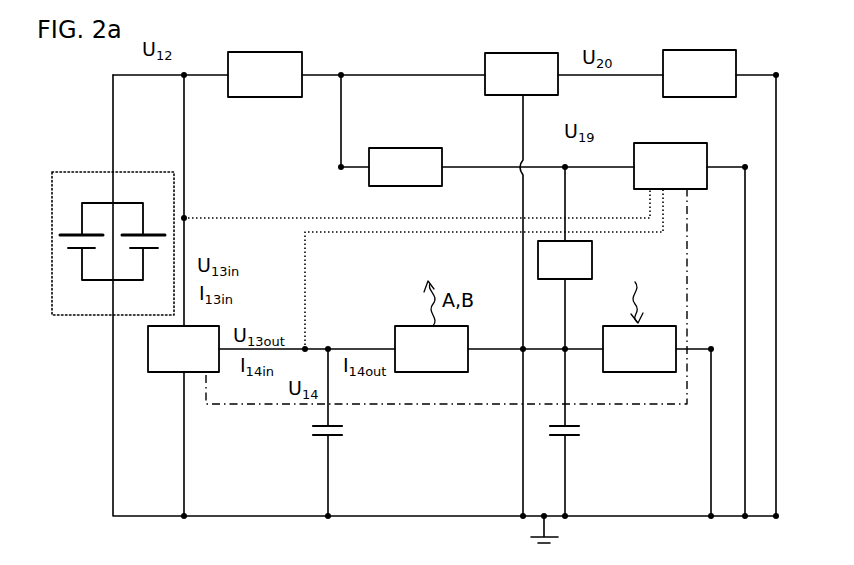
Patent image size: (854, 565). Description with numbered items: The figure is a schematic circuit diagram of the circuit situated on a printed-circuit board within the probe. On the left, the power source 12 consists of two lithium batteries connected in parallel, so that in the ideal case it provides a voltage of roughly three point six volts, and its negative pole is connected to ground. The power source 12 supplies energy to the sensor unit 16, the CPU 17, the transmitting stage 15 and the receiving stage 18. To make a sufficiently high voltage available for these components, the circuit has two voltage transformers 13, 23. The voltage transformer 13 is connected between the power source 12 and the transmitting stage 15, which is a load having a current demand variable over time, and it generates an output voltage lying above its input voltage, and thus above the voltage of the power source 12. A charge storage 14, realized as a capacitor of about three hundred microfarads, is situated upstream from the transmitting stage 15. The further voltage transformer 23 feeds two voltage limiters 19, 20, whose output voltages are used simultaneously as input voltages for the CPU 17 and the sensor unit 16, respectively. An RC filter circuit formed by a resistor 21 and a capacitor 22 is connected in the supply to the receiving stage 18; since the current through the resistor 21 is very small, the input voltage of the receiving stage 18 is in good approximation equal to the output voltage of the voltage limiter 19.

The power source 12 is at (132, 180).
The voltage transformer 13 is at (183, 349).
The charge storage 14 is at (345, 428).
The transmitting stage 15 is at (431, 349).
The sensor unit 16 is at (699, 73).
The CPU 17 is at (670, 166).
The receiving stage 18 is at (639, 349).
The voltage limiter 19 is at (405, 167).
The voltage limiter 20 is at (521, 74).
The resistor 21 is at (565, 260).
The capacitor 22 is at (580, 437).
The further voltage transformer 23 is at (265, 74).